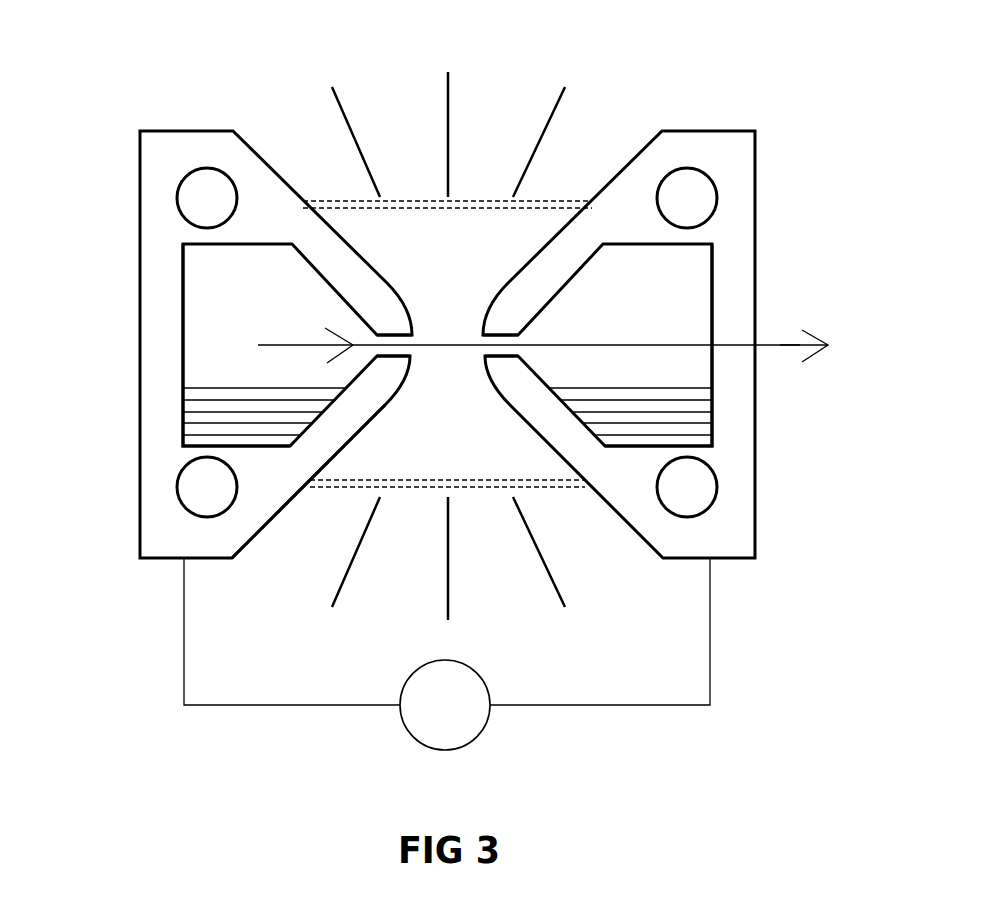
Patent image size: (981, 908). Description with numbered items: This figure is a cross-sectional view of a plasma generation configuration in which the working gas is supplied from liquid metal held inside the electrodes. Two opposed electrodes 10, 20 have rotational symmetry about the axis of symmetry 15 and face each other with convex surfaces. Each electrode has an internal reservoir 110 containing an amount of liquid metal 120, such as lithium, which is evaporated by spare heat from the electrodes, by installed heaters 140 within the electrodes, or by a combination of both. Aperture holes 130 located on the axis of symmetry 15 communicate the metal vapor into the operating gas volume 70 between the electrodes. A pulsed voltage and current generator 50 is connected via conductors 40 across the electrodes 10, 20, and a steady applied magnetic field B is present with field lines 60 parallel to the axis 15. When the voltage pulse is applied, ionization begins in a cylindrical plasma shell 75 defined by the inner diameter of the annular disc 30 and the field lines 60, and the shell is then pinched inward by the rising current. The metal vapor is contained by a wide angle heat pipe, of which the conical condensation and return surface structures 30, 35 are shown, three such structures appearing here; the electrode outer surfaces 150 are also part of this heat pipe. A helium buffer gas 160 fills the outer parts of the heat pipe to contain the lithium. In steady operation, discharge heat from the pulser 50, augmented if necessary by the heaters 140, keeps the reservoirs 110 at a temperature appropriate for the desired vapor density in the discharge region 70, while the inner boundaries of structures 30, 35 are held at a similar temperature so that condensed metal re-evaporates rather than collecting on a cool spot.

The electrode 10 is at (272, 162).
The electrode 20 is at (683, 125).
The axis of symmetry 15 is at (770, 340).
The conical condensation and return surface structure 30 is at (455, 113).
The conical condensation and return surface structure 35 is at (355, 102).
The conductors 40 is at (190, 602).
The pulsed voltage and current generator 50 is at (497, 718).
The magnetic field lines 60 is at (283, 338).
The working gas 70 is at (490, 447).
The cylindrical plasma shell 75 is at (550, 202).
The internal reservoir 110 is at (180, 417).
The liquid metal 120 is at (290, 385).
The aperture hole 130 is at (471, 333).
The heater 140 is at (168, 180).
The electrode outer surface 150 is at (280, 513).
The helium buffer gas 160 is at (502, 622).